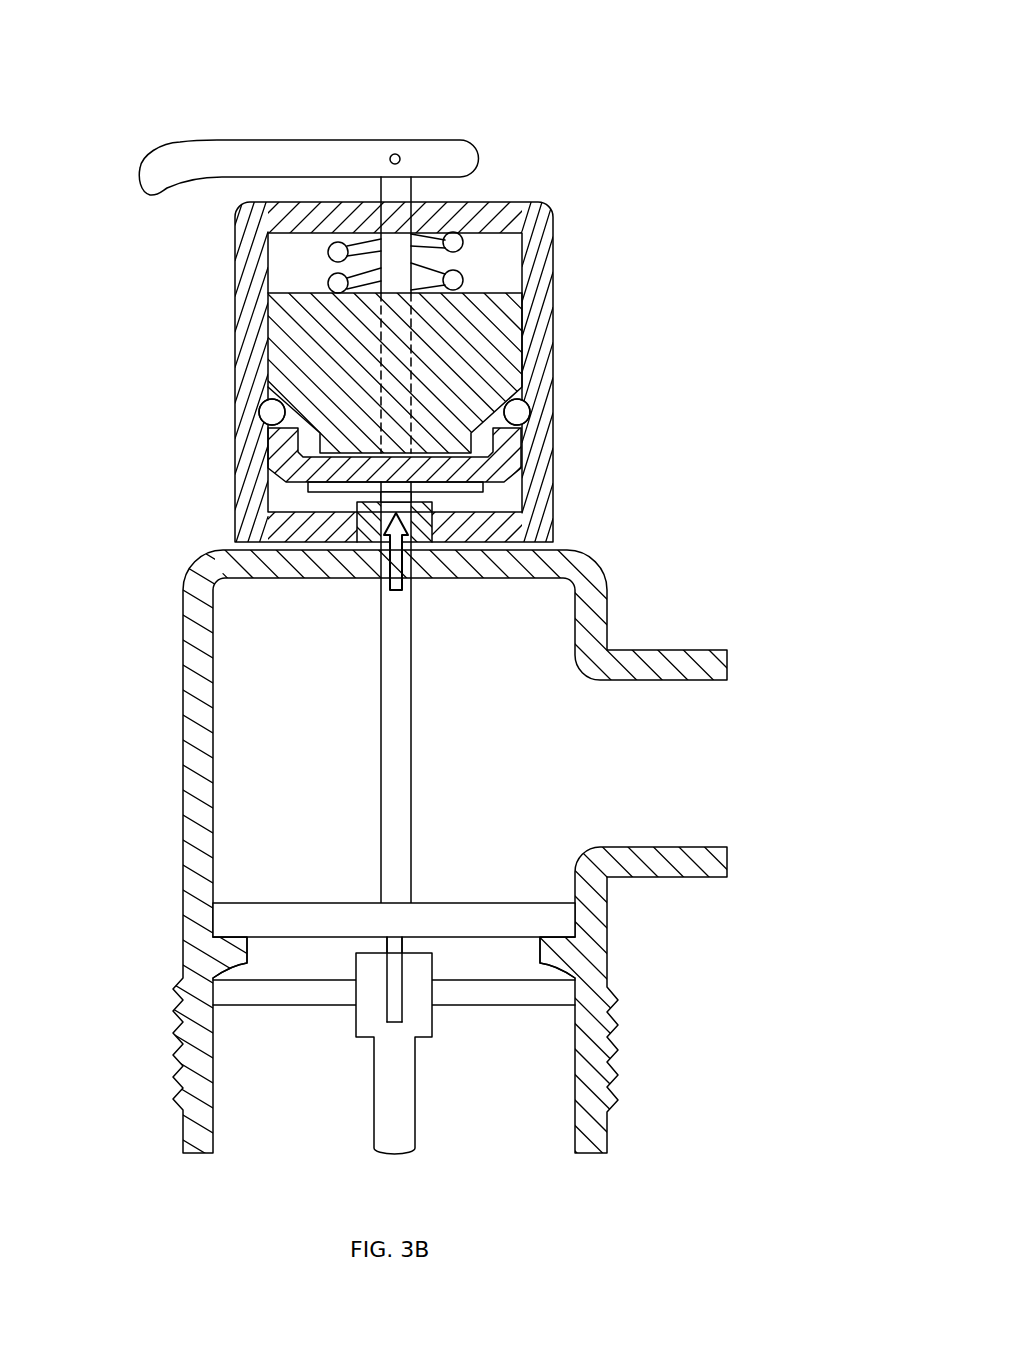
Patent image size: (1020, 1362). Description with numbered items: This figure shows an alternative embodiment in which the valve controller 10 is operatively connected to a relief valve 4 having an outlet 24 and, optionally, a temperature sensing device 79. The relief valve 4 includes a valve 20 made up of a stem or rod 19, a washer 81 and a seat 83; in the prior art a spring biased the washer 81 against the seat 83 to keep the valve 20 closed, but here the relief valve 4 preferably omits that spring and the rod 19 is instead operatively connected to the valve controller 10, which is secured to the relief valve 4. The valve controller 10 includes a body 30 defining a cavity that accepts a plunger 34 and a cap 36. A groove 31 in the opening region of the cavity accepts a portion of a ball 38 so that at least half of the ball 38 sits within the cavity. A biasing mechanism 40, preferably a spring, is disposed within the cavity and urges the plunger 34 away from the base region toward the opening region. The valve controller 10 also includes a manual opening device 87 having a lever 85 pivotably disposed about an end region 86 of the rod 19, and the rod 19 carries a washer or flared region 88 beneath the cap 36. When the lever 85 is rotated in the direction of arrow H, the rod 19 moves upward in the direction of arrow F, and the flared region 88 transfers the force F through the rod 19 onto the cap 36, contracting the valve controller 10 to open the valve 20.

The arrow H is at (320, 14).
The manual opening device 87 is at (426, 116).
The lever 85 is at (212, 140).
The end region of the stem/rod 86 is at (434, 190).
The valve controller 10 is at (638, 220).
The body 30 is at (553, 342).
The biasing mechanism 40 is at (330, 252).
The plunger 34 is at (297, 338).
The ball 38 is at (262, 412).
The groove 31 is at (262, 420).
The cap 36 is at (519, 477).
The flared region 88 is at (470, 499).
The stem/rod 19 is at (412, 695).
The arrow F is at (392, 557).
The valve 20 is at (477, 799).
The relief valve 4 is at (183, 768).
The outlet 24 is at (704, 750).
The washer 81 is at (452, 902).
The seat 83 is at (576, 945).
The temperature sensing device 79 is at (425, 1030).